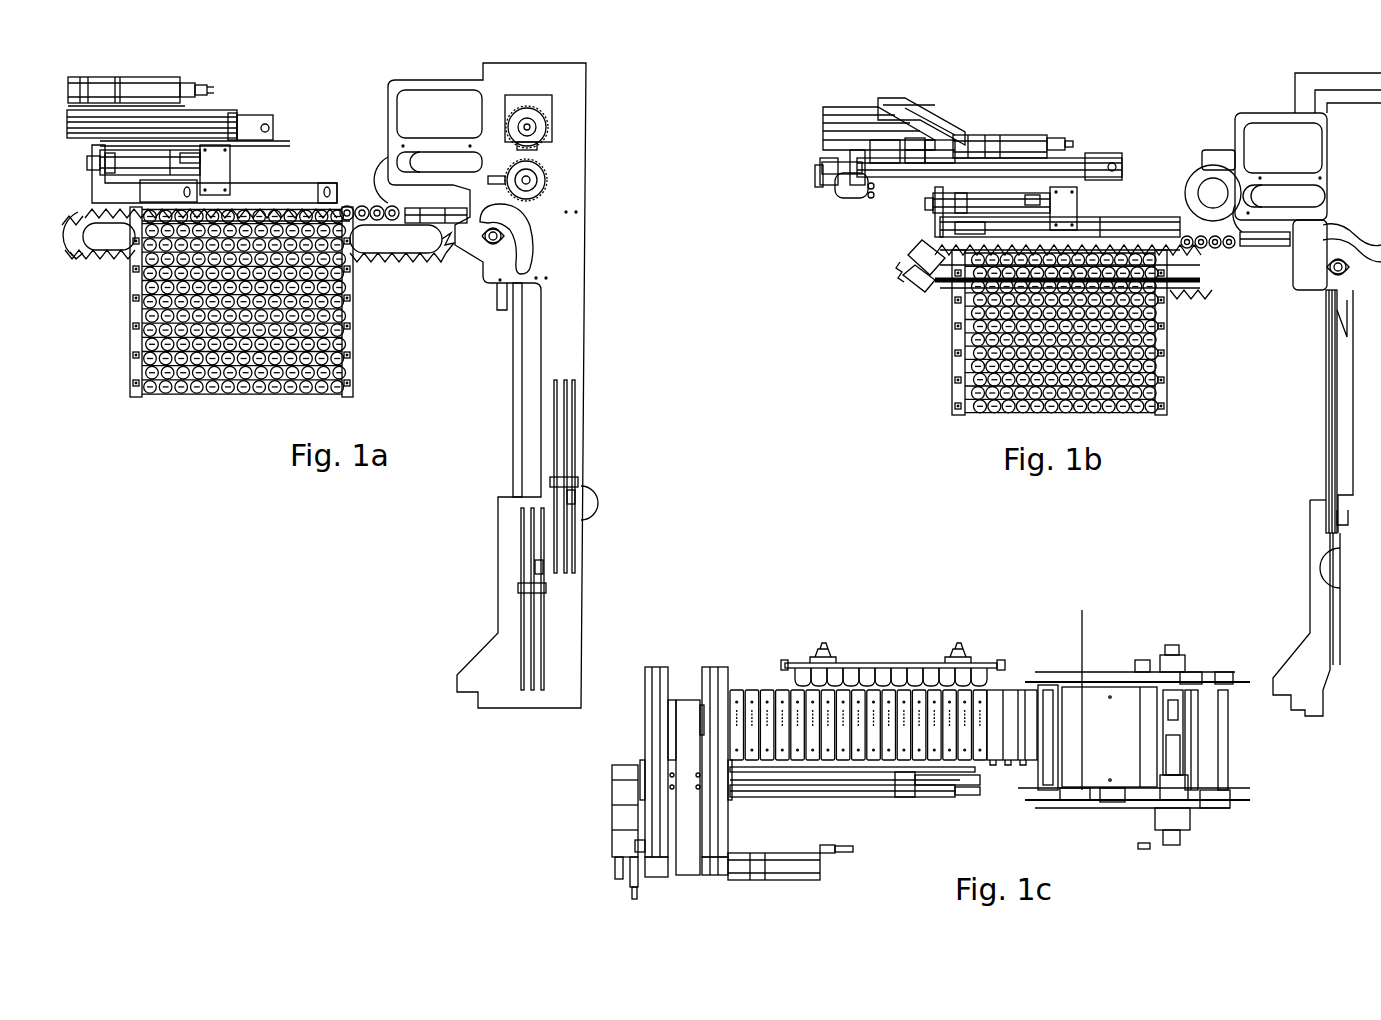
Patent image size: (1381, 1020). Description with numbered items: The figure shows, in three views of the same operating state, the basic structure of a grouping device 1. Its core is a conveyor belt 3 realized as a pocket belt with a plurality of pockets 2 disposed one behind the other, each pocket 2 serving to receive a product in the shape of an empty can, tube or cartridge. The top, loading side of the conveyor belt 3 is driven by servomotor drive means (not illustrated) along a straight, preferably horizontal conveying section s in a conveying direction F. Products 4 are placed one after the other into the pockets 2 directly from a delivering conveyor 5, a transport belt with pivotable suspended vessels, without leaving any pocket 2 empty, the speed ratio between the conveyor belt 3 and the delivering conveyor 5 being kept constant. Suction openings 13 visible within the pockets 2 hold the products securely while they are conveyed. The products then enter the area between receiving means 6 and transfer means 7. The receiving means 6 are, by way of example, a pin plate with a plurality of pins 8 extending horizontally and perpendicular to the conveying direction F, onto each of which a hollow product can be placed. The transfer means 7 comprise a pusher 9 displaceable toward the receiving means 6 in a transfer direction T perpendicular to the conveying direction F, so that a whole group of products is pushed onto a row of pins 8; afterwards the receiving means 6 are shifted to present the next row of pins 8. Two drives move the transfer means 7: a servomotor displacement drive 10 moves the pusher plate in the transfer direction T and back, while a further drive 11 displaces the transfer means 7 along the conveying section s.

In FIG. 1A, the grouping device 1 is at (227, 433).
In FIG. 1B, the grouping device 1 is at (893, 377).
In FIG. 1C, the grouping device 1 is at (560, 850).
In FIG. 1A, the pockets 2 is at (107, 220).
In FIG. 1A, the conveyor belt 3 is at (396, 250).
In FIG. 1B, the conveyor belt 3 is at (936, 290).
In FIG. 1B, the products 4 is at (1150, 212).
In FIG. 1B, the delivering conveyor 5 is at (1298, 318).
In FIG. 1A, the receiving means 6 is at (350, 361).
In FIG. 1B, the receiving means 6 is at (1150, 415).
In FIG. 1C, the receiving means 6 is at (896, 665).
In FIG. 1A, the transfer means 7 is at (273, 190).
In FIG. 1B, the transfer means 7 is at (1117, 215).
In FIG. 1C, the transfer means 7 is at (865, 770).
In FIG. 1B, the pins 8 is at (972, 414).
In FIG. 1A, the pusher 9 is at (258, 190).
In FIG. 1B, the displacement drive 10 is at (1020, 150).
In FIG. 1C, the displacement drive 10 is at (825, 880).
In FIG. 1B, the drive 11 is at (846, 200).
In FIG. 1C, the drive 11 is at (628, 870).
In FIG. 1C, the suction openings 13 is at (800, 738).
In FIG. 1C, the transfer direction T is at (750, 725).
In FIG. 1C, the conveying direction F is at (792, 615).
In FIG. 1C, the conveying section s is at (765, 925).